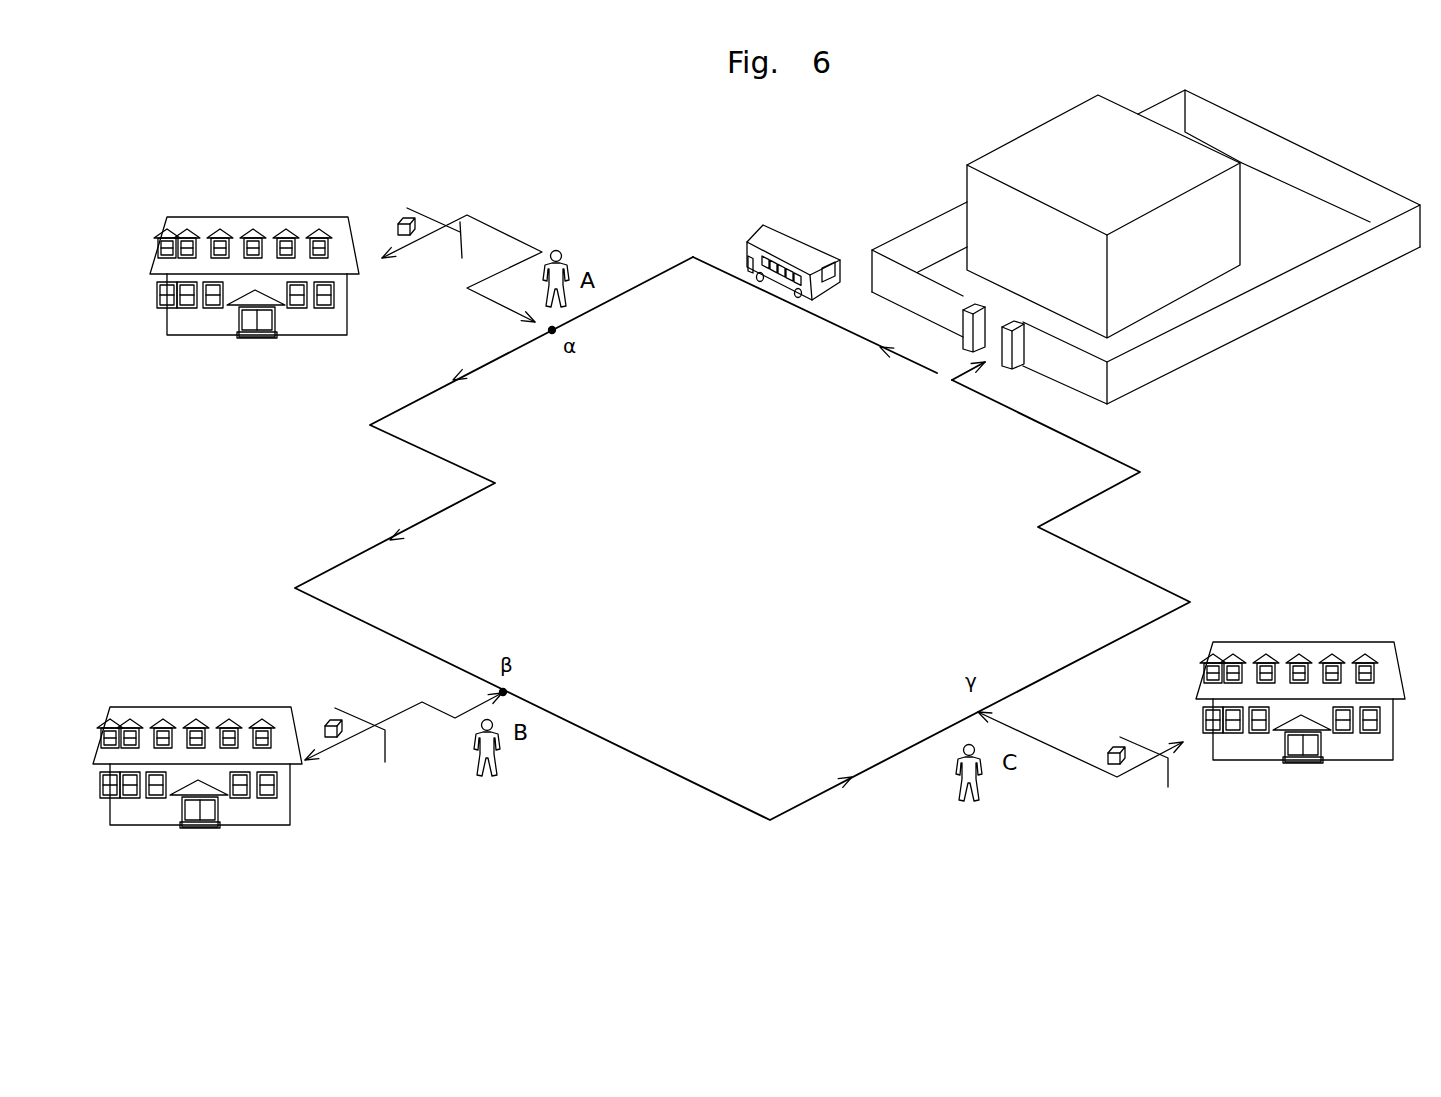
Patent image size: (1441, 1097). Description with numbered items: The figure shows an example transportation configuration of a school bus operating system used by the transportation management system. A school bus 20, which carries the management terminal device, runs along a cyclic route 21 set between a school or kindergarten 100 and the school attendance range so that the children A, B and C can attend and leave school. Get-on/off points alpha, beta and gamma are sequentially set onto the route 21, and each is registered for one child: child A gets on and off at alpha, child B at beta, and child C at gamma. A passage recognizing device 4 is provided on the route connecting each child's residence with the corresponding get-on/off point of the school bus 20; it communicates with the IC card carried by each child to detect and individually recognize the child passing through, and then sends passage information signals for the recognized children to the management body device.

The passage recognizing device 4 is at (402, 218).
The school bus 20 is at (791, 241).
The cyclic route 21 is at (650, 278).
The school or kindergarten 100 is at (1200, 297).